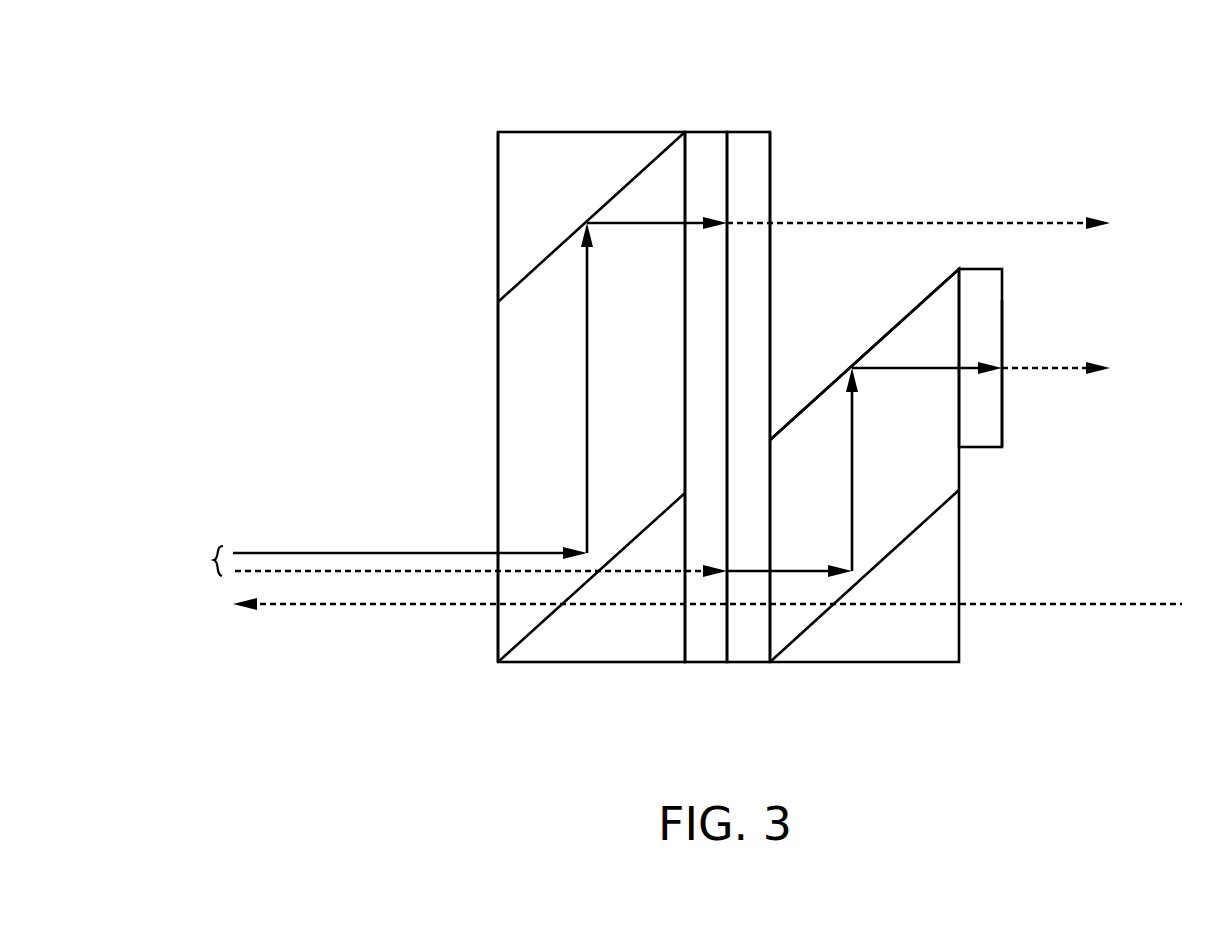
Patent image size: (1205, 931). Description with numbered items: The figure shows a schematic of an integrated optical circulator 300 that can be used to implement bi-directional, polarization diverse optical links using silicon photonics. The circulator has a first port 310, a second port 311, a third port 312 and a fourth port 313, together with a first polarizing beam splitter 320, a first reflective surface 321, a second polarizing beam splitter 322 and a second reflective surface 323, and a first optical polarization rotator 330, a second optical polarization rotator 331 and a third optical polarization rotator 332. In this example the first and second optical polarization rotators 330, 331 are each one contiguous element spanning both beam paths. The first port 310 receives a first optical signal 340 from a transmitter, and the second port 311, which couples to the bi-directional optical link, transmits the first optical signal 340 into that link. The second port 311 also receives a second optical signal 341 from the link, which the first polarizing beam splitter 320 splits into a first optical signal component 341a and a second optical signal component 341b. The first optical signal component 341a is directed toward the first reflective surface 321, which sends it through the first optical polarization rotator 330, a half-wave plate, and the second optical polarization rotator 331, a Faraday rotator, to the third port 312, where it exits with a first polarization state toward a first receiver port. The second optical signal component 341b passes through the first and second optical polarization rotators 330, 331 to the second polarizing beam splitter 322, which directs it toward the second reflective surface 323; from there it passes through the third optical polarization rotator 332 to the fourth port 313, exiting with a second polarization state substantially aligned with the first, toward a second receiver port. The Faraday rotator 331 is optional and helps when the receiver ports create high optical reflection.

The integrated optical circulator 300 is at (182, 99).
The first port 310 is at (959, 604).
The second port 311 is at (498, 548).
The third port 312 is at (772, 228).
The fourth port 313 is at (1002, 370).
The first polarizing beam splitter 320 is at (565, 605).
The first reflective surface 321 is at (548, 257).
The second polarizing beam splitter 322 is at (932, 513).
The second reflective surface 323 is at (888, 332).
The first optical polarization rotator 330 is at (703, 653).
The second optical polarization rotator 331 is at (747, 653).
The third optical polarization rotator 332 is at (995, 305).
The first optical signal 340 is at (1055, 604).
The second optical signal 341 is at (218, 548).
The first optical signal component 341a is at (587, 382).
The second optical signal component 341b is at (662, 570).